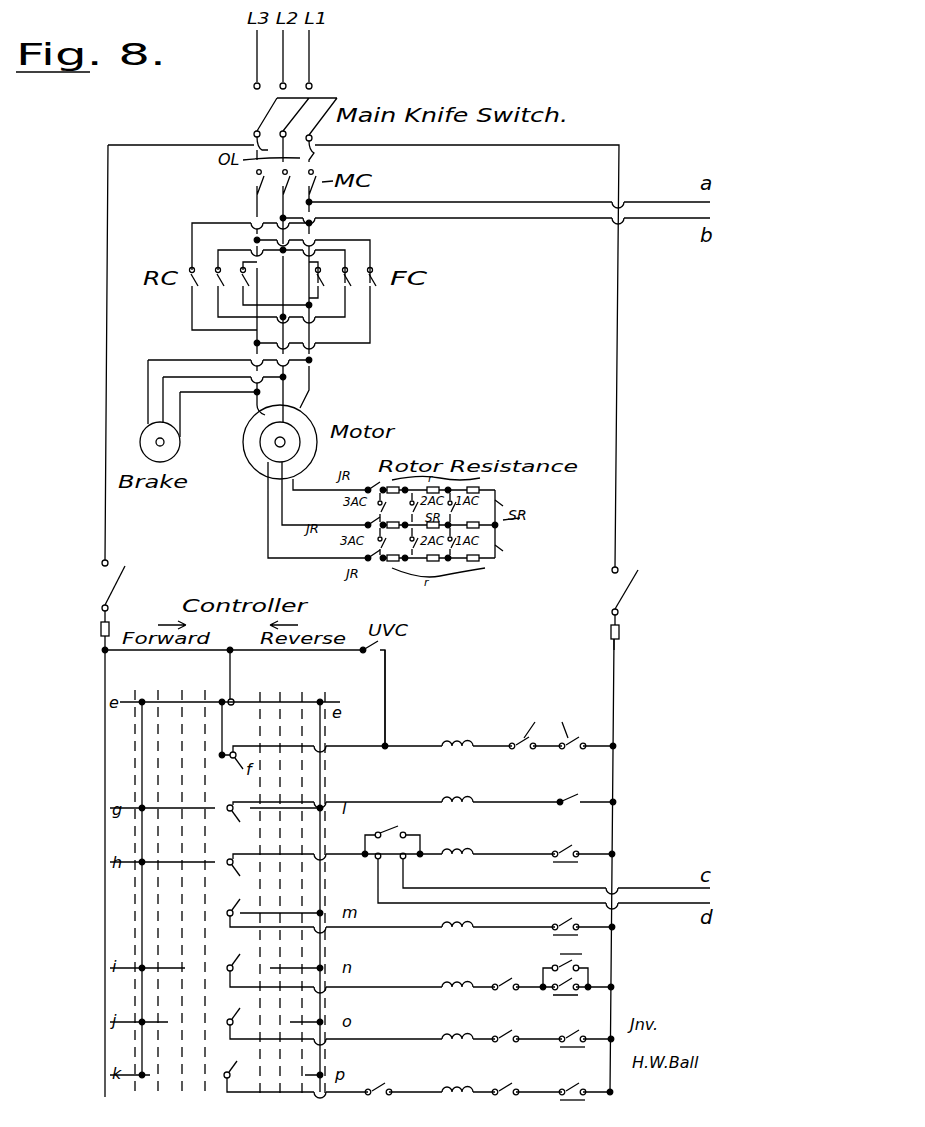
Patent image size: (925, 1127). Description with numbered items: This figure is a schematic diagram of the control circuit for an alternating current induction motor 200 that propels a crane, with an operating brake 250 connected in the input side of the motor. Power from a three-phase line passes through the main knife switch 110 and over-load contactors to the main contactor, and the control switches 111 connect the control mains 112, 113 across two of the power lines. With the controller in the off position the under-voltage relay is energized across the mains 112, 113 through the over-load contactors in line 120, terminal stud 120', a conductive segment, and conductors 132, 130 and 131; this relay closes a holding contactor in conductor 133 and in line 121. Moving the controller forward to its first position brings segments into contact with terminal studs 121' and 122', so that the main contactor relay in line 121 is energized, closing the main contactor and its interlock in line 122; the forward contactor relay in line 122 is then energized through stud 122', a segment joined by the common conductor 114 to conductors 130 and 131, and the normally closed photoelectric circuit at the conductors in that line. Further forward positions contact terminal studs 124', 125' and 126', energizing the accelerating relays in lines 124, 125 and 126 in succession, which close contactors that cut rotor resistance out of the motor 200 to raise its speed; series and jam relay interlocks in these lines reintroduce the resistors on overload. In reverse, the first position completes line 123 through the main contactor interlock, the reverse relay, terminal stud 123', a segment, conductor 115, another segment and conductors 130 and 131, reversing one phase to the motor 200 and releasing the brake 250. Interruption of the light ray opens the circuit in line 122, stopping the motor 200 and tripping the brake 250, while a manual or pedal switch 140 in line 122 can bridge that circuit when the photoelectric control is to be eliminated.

The main knife switch 110 is at (264, 110).
The control switches 111 is at (105, 590).
The control main 112 is at (617, 396).
The control main 113 is at (107, 432).
The common conductor 114 is at (135, 916).
The conductor 115 is at (323, 762).
The line 120 is at (424, 742).
The terminal stud 120' is at (226, 774).
The line 121 is at (424, 797).
The terminal stud 121' is at (230, 823).
The line 122 is at (424, 851).
The terminal stud 122' is at (230, 876).
The line 123 is at (422, 930).
The terminal stud 123' is at (230, 905).
The line 124 is at (422, 988).
The terminal stud 124' is at (228, 956).
The line 125 is at (422, 1037).
The terminal stud 125' is at (234, 1010).
The line 126 is at (420, 1091).
The terminal stud 126' is at (230, 1063).
The conductor 130 is at (233, 672).
The conductor 131 is at (236, 664).
The conductor 132 is at (239, 730).
The conductor 133 is at (386, 712).
The switch 140 is at (400, 830).
The alternating current induction motor 200 is at (304, 428).
The operating brake 250 is at (182, 445).